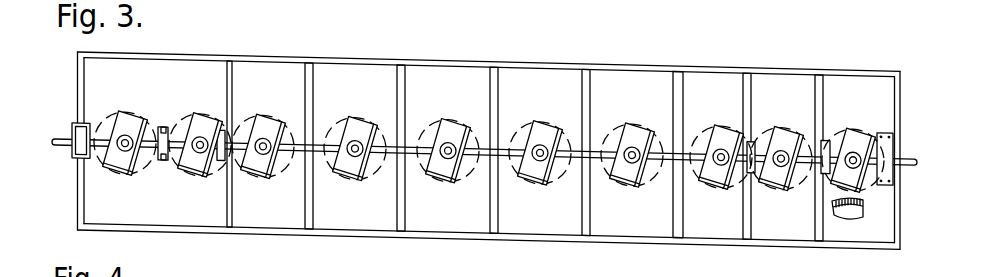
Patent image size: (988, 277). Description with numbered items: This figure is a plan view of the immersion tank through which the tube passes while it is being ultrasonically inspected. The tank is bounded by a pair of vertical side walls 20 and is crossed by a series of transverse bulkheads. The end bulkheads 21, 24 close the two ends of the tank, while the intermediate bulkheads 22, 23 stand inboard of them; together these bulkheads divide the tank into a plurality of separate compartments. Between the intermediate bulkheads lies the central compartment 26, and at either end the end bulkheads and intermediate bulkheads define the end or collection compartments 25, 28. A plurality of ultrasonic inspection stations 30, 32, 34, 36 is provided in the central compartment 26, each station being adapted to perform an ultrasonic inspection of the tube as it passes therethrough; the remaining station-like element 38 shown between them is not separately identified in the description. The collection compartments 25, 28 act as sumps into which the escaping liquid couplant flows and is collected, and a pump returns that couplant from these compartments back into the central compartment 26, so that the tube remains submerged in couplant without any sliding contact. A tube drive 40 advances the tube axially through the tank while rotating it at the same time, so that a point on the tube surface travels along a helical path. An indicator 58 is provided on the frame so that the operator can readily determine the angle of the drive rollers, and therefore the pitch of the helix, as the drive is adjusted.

The vertical side walls 20 is at (455, 63).
The end bulkhead 21 is at (823, 97).
The intermediate bulkhead 22 is at (750, 92).
The intermediate bulkhead 23 is at (230, 82).
The end bulkhead 24 is at (85, 95).
The collection compartment 25 is at (791, 99).
The central compartment 26 is at (528, 92).
The collection compartment 28 is at (184, 85).
The ultrasonic inspection station 30 is at (683, 228).
The ultrasonic inspection station 32 is at (590, 225).
The ultrasonic inspection station 34 is at (498, 217).
The ultrasonic inspection station 36 is at (405, 218).
The partition wall 38 is at (313, 212).
The tube drive 40 is at (873, 126).
The indicator 58 is at (861, 215).